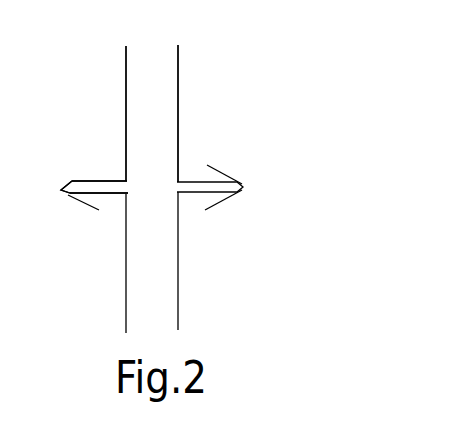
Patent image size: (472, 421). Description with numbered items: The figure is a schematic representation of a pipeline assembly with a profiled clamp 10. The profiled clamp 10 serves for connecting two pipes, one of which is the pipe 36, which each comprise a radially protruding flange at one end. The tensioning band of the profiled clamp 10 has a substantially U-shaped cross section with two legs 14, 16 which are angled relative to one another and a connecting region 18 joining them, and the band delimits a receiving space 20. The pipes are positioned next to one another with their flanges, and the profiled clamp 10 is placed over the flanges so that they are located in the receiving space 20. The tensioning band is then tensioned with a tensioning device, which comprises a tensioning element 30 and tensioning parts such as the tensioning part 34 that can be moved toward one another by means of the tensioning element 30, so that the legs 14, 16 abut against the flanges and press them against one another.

The profiled clamp 10 is at (245, 154).
The leg 14 is at (83, 203).
The leg 16 is at (101, 178).
The connecting region 18 is at (58, 189).
The receiving space 20 is at (110, 215).
The tensioning element 30 is at (180, 90).
The tensioning part 34 is at (188, 182).
The pipe 36 is at (188, 197).